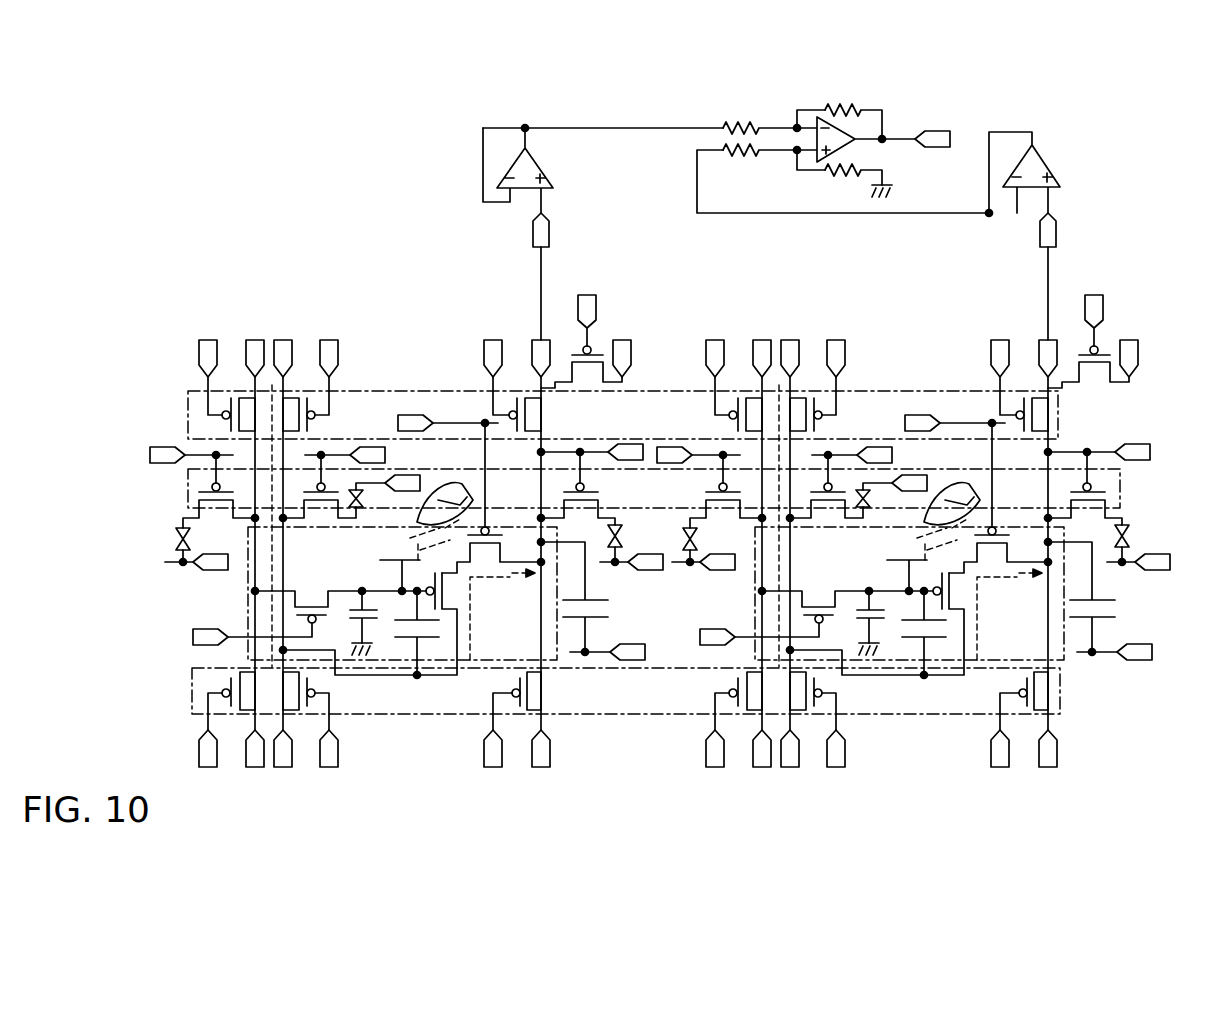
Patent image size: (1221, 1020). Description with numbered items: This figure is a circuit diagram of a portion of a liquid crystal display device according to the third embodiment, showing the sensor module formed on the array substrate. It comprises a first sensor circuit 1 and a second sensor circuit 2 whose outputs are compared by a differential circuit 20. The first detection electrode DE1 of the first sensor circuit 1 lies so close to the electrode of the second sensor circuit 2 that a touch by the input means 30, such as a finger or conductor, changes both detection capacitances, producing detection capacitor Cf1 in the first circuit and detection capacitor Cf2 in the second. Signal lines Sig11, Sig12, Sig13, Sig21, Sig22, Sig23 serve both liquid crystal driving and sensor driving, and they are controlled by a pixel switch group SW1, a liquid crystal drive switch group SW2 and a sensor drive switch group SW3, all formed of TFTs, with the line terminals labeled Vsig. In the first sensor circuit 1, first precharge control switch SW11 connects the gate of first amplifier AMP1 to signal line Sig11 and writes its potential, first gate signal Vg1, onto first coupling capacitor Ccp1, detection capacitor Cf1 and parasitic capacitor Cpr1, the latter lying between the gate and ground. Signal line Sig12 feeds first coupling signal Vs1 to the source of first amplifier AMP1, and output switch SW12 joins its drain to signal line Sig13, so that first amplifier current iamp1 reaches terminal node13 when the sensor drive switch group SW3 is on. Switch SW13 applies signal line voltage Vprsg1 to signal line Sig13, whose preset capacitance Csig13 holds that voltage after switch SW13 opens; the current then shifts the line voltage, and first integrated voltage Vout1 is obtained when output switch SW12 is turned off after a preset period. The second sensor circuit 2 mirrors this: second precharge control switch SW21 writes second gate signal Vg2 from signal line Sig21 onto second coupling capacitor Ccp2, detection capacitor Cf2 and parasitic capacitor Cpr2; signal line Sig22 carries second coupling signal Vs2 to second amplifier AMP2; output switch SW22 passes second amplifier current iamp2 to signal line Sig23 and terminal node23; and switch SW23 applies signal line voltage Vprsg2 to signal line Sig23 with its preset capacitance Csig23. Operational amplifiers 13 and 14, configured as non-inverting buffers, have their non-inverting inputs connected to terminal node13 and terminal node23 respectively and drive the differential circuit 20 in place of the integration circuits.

The first sensor circuit 1 is at (248, 600).
The second sensor circuit 2 is at (755, 600).
The operational amplifier 13 is at (545, 160).
The operational amplifier 14 is at (1052, 158).
The differential circuit 20 is at (895, 100).
The input means 30 is at (461, 484).
The pixel switch group SW1 is at (188, 490).
The liquid crystal drive switch group SW2 is at (192, 677).
The sensor drive switch group SW3 is at (188, 400).
The first precharge control switch SW11 is at (325, 622).
The output switch SW12 is at (487, 553).
The switch SW13 is at (591, 335).
The second precharge control switch SW21 is at (795, 666).
The output switch SW22 is at (998, 569).
The switch SW23 is at (1095, 327).
The first amplifier AMP1 is at (457, 592).
The second amplifier AMP2 is at (918, 624).
The parasitic capacitor Cpr1 is at (375, 622).
The parasitic capacitor Cpr2 is at (895, 648).
The first coupling capacitor Ccp1 is at (428, 640).
The second coupling capacitor Ccp2 is at (940, 652).
The detection capacitor Cf1 is at (410, 540).
The detection capacitor Cf2 is at (908, 539).
The first detection electrode DE1 is at (382, 562).
The preset capacitance Csig13 is at (600, 617).
The preset capacitance Csig23 is at (1117, 601).
The signal line Sig11 is at (256, 455).
The signal line Sig12 is at (283, 455).
The signal line Sig13 is at (545, 462).
The signal line Sig21 is at (735, 520).
The signal line Sig22 is at (817, 520).
The signal line Sig23 is at (1092, 437).
The terminal node13 is at (532, 343).
The terminal node23 is at (1013, 488).
The first amplifier current iamp1 is at (594, 560).
The second amplifier current iamp2 is at (1137, 579).
The first gate signal Vg1 is at (253, 322).
The first coupling signal Vs1 is at (281, 322).
The second gate signal Vg2 is at (749, 293).
The second coupling signal Vs2 is at (795, 296).
The first integrated voltage Vout1 is at (553, 290).
The signal line voltage Vprsg1 is at (623, 320).
The signal line voltage Vprsg2 is at (1155, 287).
The signal voltage Vsig is at (257, 782).